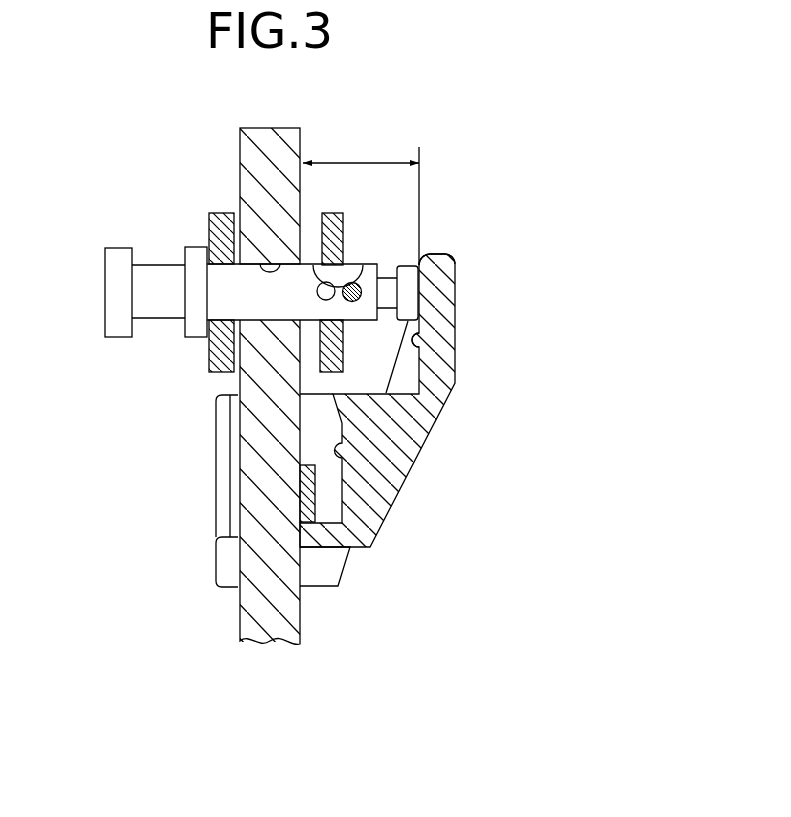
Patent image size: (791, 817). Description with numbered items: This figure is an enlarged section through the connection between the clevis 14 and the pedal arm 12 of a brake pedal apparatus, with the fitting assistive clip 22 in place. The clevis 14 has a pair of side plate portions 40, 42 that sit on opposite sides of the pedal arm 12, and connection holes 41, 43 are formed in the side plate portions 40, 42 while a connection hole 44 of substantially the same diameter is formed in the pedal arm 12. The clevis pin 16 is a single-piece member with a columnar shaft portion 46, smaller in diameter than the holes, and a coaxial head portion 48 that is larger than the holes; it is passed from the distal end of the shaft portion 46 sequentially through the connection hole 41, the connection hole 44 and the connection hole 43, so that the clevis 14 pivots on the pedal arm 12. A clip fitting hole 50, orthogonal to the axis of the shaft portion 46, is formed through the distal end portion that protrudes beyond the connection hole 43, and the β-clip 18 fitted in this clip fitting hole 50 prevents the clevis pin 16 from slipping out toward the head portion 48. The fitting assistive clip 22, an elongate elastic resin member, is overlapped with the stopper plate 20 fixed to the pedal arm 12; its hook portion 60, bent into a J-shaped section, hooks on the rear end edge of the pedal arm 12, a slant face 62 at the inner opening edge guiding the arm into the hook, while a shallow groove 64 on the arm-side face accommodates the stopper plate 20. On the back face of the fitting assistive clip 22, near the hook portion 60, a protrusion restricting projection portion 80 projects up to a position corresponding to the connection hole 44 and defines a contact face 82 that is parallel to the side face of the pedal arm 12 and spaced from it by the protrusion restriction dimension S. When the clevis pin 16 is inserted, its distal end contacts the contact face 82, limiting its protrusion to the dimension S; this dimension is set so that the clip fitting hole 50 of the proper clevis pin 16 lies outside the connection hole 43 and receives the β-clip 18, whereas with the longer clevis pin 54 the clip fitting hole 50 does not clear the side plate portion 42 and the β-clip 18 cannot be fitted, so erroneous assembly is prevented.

The pedal arm 12 is at (272, 613).
The clevis 14 is at (273, 258).
The clevis pin 16 is at (170, 302).
The β-clip 18 is at (360, 282).
The stopper plate 20 is at (367, 549).
The fitting assistive clip 22 is at (442, 511).
The side plate portion 40 is at (222, 213).
The connection hole 41 is at (187, 263).
The side plate portion 42 is at (330, 212).
The connection hole 43 is at (336, 310).
The connection hole 44 is at (277, 257).
The shaft portion 46 is at (266, 307).
The head portion 48 is at (197, 325).
The clip fitting hole 50 is at (311, 268).
The clevis pin 54 is at (88, 250).
The hook portion 60 is at (227, 562).
The slant face 62 is at (230, 455).
The groove 64 is at (352, 438).
The protrusion restricting projection portion 80 is at (435, 253).
The contact face 82 is at (418, 350).
The protrusion restriction dimension S is at (361, 201).